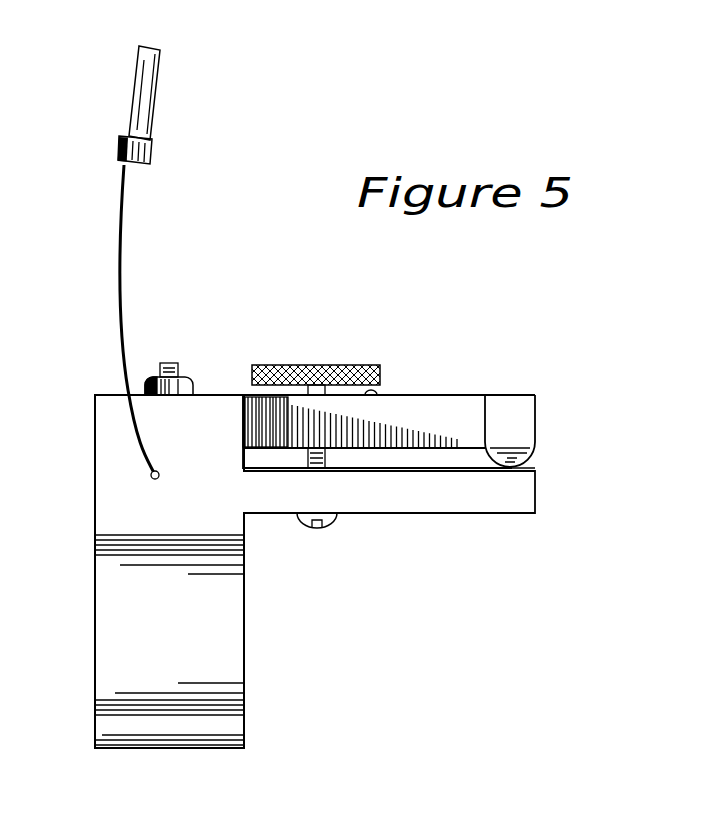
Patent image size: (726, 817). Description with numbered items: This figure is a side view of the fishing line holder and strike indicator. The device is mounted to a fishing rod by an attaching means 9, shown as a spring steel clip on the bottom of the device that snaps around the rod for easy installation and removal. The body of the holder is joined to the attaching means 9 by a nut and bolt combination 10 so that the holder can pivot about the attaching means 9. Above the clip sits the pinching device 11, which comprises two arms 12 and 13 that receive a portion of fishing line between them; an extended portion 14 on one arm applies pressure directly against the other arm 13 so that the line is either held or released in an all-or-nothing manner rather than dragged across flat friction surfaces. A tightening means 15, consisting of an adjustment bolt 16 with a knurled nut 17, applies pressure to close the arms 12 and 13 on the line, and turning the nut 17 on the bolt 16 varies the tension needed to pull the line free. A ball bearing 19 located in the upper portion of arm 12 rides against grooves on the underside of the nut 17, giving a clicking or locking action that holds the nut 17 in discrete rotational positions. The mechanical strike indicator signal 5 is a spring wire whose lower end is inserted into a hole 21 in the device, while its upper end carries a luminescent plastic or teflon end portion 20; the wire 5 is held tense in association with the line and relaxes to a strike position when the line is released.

The mechanical strike indicator signal 5 is at (125, 292).
The attaching means 9 is at (217, 623).
The nut and bolt combination 10 is at (192, 383).
The pinching device 11 is at (112, 437).
The arm 12 is at (520, 430).
The arm 13 is at (520, 498).
The extended portion 14 is at (520, 468).
The tightening means 15 is at (313, 367).
The adjustment bolt 16 is at (323, 525).
The nut 17 is at (377, 372).
The ball bearing 19 is at (377, 392).
The end portion 20 is at (152, 150).
The hole 21 is at (151, 477).